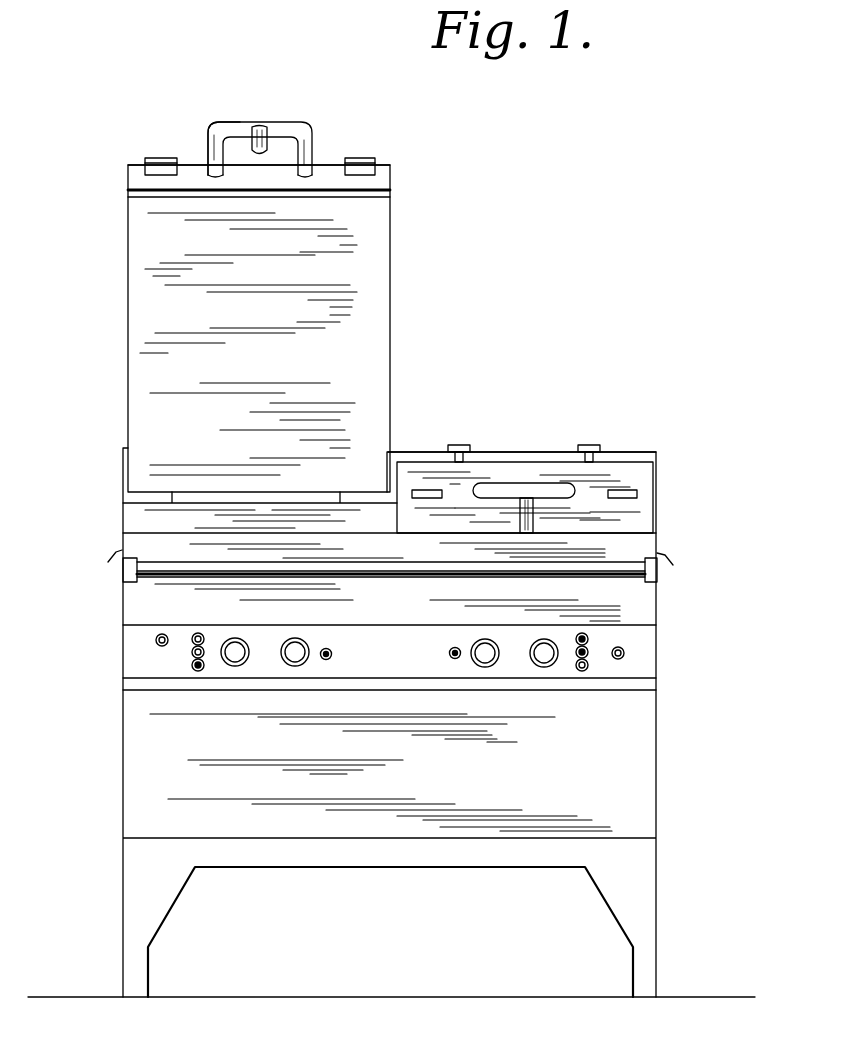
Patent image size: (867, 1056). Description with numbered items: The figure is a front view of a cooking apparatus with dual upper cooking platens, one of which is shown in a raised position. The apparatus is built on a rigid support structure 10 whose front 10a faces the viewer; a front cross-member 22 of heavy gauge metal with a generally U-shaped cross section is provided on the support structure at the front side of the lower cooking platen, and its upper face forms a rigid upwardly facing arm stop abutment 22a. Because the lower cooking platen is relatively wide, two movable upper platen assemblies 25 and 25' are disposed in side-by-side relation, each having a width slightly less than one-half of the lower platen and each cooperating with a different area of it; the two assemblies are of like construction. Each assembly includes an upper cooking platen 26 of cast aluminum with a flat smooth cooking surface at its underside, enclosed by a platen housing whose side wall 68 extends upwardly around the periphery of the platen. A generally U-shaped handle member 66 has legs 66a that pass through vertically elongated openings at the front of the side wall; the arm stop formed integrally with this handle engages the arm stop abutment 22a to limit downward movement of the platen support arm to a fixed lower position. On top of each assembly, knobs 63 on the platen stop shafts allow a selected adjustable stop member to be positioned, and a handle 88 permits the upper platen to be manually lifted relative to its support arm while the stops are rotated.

The rigid support structure 10 is at (657, 731).
The front 10a is at (625, 785).
The front cross-member 22 is at (187, 553).
The arm stop abutment 22a is at (175, 535).
The upper cooking platen assembly 25 is at (260, 142).
The upper cooking platen assembly 25' is at (554, 442).
The upper cooking platen 26 is at (390, 336).
The knob or handle 63 is at (458, 445).
The handle member 66 is at (292, 128).
The legs 66a is at (208, 148).
The side wall 68 is at (637, 508).
The handle 88 is at (160, 158).